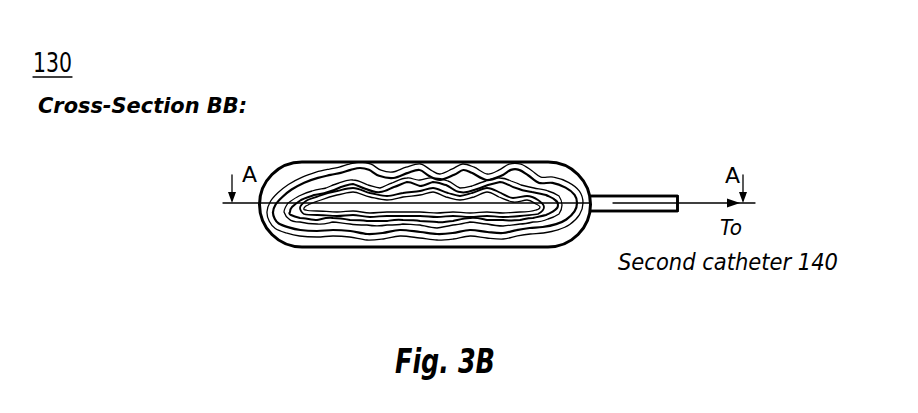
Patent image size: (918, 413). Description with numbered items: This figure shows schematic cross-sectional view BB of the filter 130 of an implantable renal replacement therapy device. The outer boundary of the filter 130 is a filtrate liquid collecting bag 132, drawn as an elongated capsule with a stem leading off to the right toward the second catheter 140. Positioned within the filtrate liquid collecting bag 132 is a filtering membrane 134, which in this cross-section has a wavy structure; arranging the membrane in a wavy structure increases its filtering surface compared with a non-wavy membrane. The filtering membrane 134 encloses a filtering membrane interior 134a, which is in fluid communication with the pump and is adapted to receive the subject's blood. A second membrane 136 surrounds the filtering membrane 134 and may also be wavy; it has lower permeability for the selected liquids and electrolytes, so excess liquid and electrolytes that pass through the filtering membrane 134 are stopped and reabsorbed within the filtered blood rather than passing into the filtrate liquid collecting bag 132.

The filter 130 is at (425, 192).
The filtrate liquid collecting bag 132 is at (368, 161).
The filtering membrane 134 is at (485, 185).
The filtering membrane interior 134a is at (404, 202).
The second membrane 136 is at (505, 232).
The second catheter 140 is at (634, 203).